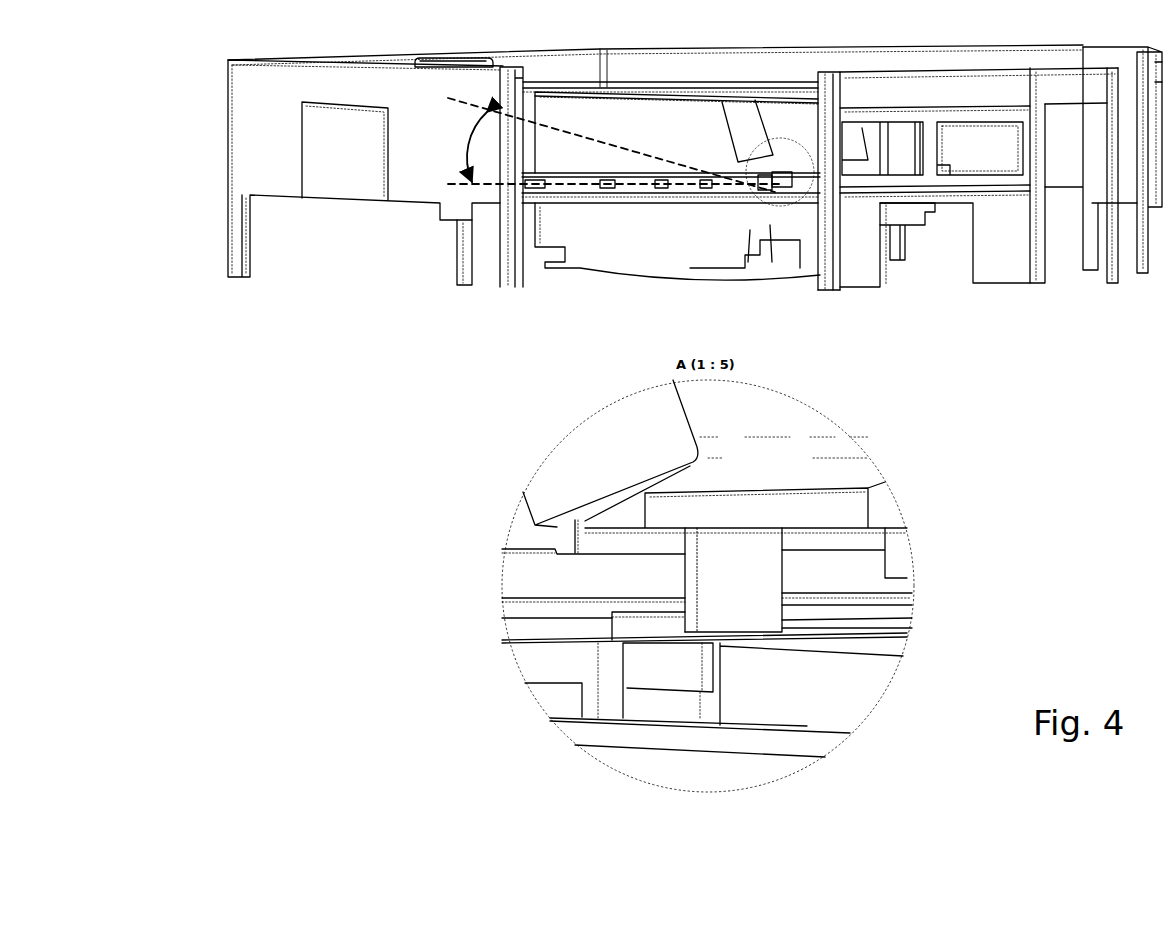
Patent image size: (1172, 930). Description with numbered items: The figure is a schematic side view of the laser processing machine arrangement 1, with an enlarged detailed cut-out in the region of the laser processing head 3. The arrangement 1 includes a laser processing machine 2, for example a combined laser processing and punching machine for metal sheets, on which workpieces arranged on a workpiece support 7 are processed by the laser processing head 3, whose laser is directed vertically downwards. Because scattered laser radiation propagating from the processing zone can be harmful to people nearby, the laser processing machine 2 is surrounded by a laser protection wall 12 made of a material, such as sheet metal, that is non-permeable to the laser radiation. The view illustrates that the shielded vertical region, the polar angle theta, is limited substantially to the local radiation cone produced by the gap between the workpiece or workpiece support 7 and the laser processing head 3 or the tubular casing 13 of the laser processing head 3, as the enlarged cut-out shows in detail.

The laser processing machine arrangement 1 is at (204, 111).
The laser processing machine 2 is at (660, 250).
The laser processing head 3 is at (800, 175).
The workpiece support 7 is at (618, 192).
The laser protection wall 12 is at (418, 182).
The tubular casing 13 is at (780, 178).